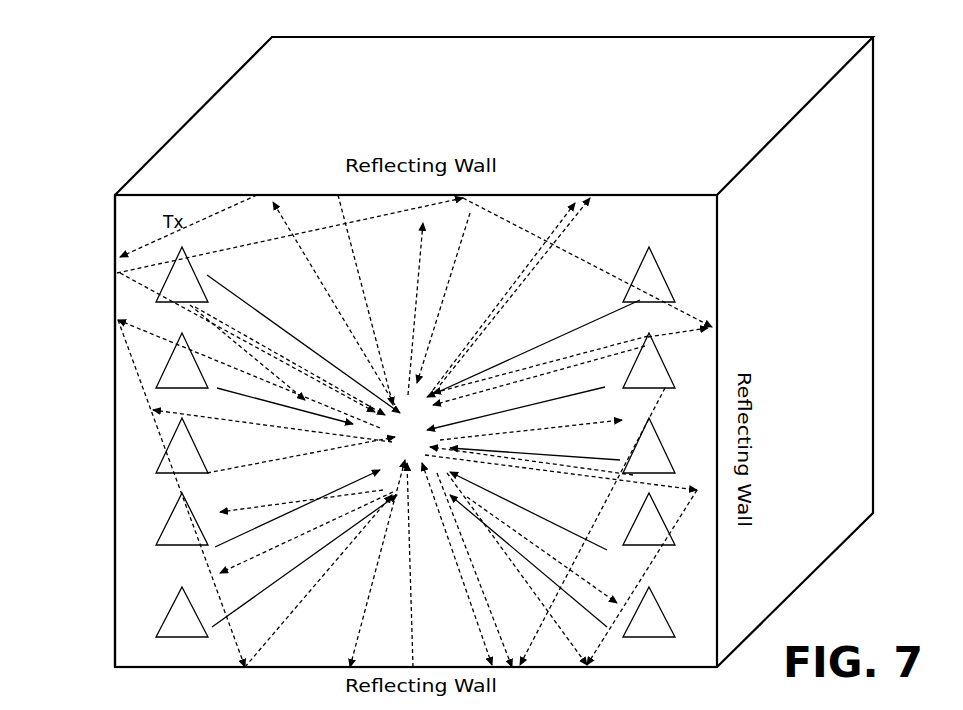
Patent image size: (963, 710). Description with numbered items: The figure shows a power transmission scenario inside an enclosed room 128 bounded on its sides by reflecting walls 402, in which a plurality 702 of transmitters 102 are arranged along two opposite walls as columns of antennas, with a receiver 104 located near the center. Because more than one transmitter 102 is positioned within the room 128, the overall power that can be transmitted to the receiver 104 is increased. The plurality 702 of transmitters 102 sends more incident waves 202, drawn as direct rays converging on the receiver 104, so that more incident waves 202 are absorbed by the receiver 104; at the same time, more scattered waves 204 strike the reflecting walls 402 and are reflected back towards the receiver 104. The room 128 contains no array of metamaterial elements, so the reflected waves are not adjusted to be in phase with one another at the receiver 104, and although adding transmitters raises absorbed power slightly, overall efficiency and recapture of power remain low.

The room 128 is at (190, 143).
The reflecting walls 402 is at (115, 292).
The plurality of transmitters 702 is at (663, 455).
The transmitter 102 is at (655, 622).
The receiver 104 is at (400, 408).
The incident waves 202 is at (577, 323).
The scattered waves 204 is at (347, 250).